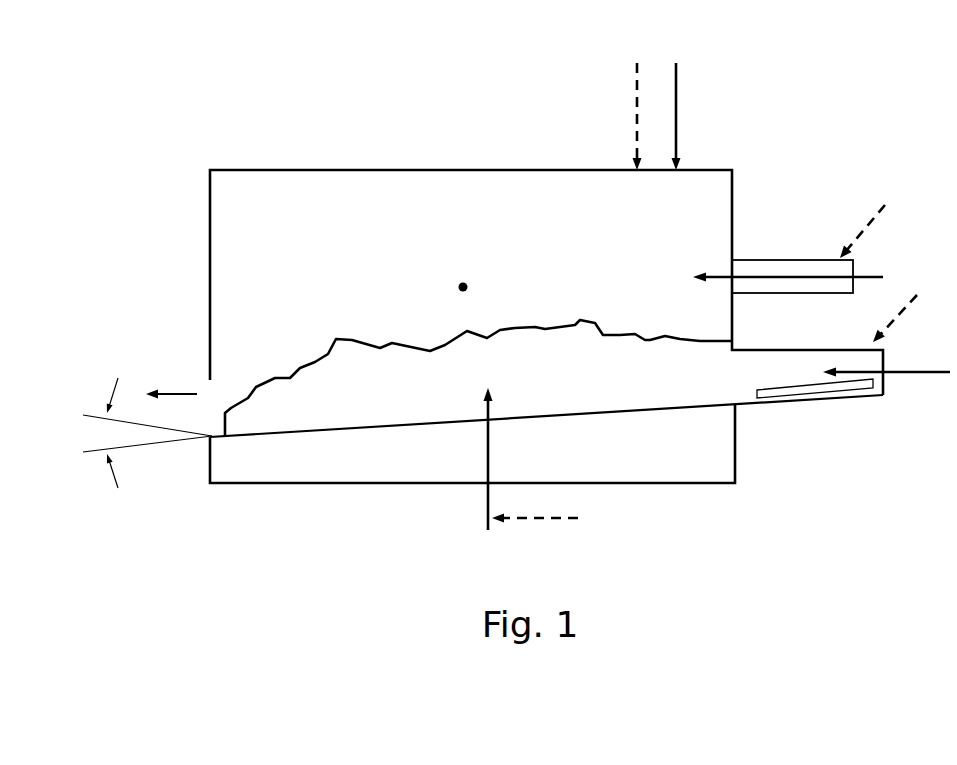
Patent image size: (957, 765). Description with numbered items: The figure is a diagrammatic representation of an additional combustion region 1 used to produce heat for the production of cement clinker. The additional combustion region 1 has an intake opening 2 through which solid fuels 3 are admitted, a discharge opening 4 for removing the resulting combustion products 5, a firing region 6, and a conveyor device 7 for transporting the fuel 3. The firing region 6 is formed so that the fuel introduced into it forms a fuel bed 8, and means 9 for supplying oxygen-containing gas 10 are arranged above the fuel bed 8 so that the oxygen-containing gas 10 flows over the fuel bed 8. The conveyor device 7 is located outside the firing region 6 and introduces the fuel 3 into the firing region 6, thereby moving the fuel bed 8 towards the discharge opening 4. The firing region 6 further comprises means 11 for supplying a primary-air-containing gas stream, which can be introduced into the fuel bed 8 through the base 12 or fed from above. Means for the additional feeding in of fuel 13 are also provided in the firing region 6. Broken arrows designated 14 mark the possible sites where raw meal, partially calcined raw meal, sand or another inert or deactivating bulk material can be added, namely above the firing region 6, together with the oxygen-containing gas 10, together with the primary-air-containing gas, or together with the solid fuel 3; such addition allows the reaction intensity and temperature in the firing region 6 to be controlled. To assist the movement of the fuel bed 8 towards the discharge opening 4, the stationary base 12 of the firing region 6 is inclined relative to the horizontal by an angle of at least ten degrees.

The additional combustion region 1 is at (802, 133).
The intake opening 2 is at (730, 372).
The solid fuels 3 is at (886, 386).
The discharge opening 4 is at (210, 412).
The combustion products 5 is at (173, 390).
The firing region 6 is at (463, 287).
The conveyor device 7 is at (813, 388).
The fuel bed 8 is at (392, 343).
The means for supplying oxygen-containing gas 9 is at (783, 260).
The oxygen-containing gas 10 is at (717, 277).
The means for supplying a primary-air-containing gas stream 11 is at (485, 498).
The base 12 is at (645, 415).
The means for the additional feeding in of fuel 13 is at (691, 116).
The means for supplying deactivating or inert bulk material 14 is at (718, 308).